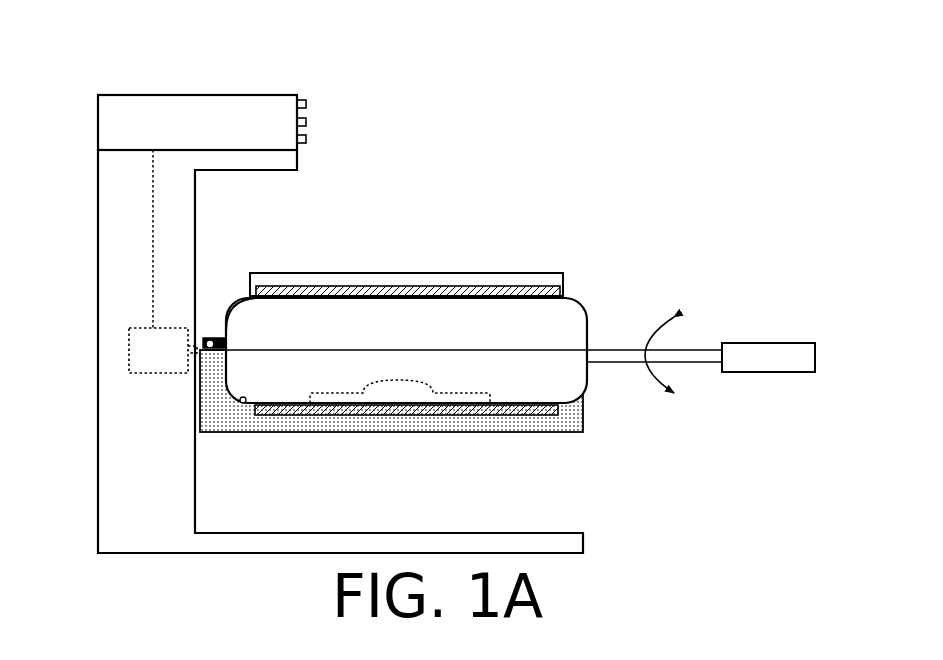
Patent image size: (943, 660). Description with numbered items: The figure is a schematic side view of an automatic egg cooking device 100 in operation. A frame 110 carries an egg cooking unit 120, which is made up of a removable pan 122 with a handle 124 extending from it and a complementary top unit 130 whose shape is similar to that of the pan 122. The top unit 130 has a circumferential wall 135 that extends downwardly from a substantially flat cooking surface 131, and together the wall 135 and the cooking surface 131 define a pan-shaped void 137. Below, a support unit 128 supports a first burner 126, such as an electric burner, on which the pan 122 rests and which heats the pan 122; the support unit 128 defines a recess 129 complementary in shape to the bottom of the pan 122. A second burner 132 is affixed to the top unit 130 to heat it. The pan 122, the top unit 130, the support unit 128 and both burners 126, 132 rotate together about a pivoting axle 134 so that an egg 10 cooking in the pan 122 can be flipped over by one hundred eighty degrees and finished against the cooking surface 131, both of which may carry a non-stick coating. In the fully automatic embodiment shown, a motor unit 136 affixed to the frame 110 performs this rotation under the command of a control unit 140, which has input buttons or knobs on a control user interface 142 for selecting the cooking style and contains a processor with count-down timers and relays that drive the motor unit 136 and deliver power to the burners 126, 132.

The automatic egg cooking device 100 is at (705, 135).
The frame 110 is at (97, 260).
The control unit 140 is at (156, 94).
The control user interface 142 is at (307, 122).
The motor unit 136 is at (129, 358).
The pivoting axle 134 is at (199, 338).
The circumferential wall 135 is at (227, 336).
The top unit 130 is at (406, 277).
The cooking surface 131 is at (350, 297).
The second burner 132 is at (467, 287).
The pan-shaped void 137 is at (482, 340).
The egg cooking unit 120 is at (605, 320).
The removable pan 122 is at (495, 386).
The handle 124 is at (752, 341).
The egg 10 is at (356, 393).
The first burner 126 is at (438, 416).
The support unit 128 is at (317, 432).
The recess 129 is at (243, 403).